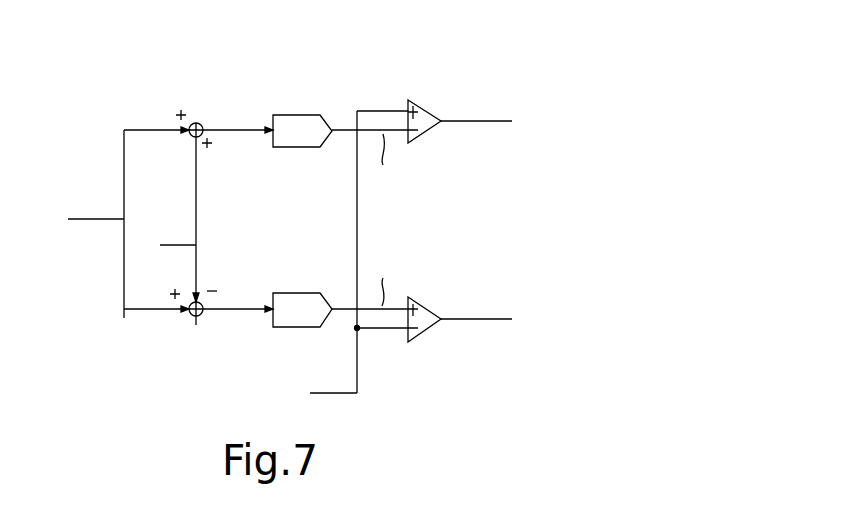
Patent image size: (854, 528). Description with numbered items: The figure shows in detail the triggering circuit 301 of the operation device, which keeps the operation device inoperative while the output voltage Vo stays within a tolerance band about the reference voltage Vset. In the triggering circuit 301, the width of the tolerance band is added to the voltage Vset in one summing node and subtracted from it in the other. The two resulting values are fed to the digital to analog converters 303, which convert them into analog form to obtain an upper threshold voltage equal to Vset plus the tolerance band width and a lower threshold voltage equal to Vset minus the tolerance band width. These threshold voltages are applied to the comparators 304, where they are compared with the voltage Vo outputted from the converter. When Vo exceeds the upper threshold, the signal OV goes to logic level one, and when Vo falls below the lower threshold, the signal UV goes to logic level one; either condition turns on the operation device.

The triggering circuit 301 is at (126, 101).
The digital to analog converters 303 is at (305, 113).
The comparators 304 is at (433, 106).